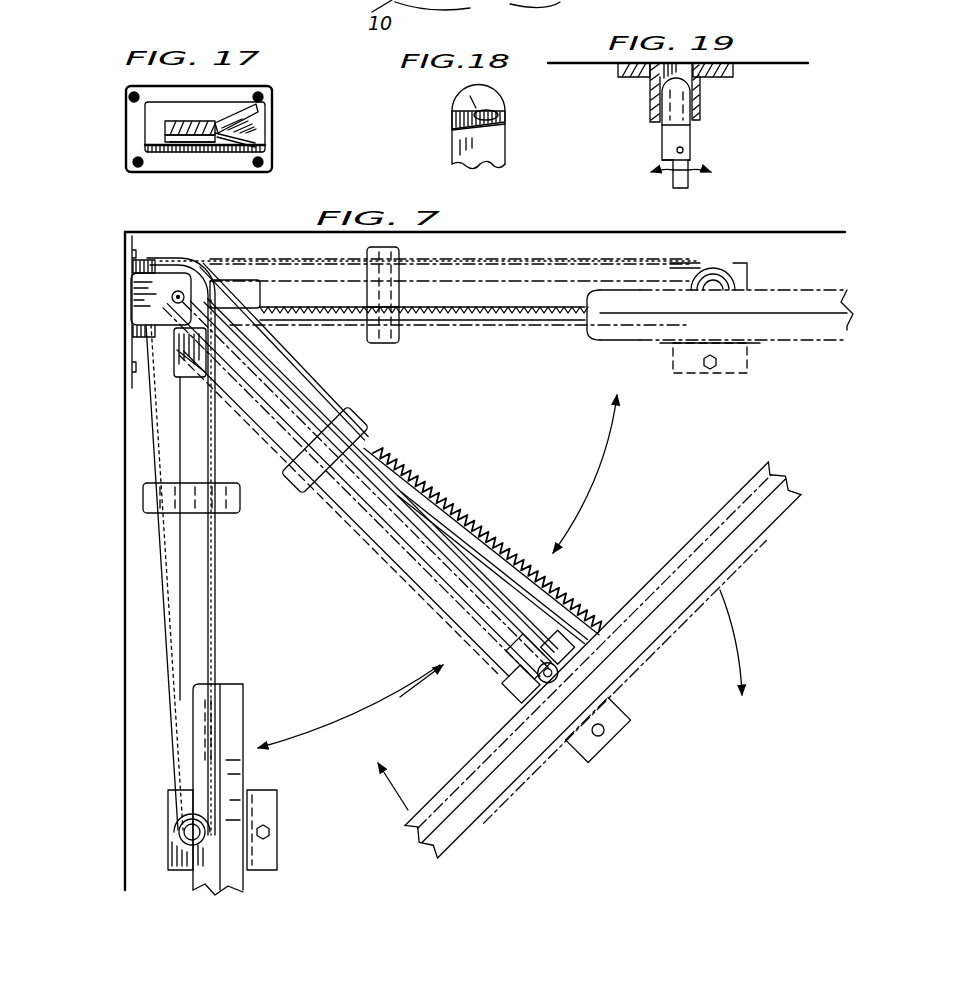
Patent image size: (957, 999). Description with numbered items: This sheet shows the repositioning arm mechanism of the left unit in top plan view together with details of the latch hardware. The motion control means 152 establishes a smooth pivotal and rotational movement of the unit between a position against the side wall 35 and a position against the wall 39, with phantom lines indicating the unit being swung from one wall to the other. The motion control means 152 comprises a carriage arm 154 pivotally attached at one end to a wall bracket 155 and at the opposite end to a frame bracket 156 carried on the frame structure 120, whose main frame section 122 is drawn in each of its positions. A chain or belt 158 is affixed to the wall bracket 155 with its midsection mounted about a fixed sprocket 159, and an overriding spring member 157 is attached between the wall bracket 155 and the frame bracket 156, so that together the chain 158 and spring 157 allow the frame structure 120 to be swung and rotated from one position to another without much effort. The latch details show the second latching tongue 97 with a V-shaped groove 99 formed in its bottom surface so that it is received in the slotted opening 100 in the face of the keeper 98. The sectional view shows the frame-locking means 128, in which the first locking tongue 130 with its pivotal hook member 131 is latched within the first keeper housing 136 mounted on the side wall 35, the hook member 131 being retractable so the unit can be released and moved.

In FIG. 7, the side wall 35 is at (537, 225).
In FIG. 7, the wall 39 is at (123, 722).
In FIG. 17, the second latching tongue 97 is at (222, 138).
In FIG. 18, the second latching tongue 97 is at (497, 146).
In FIG. 17, the keeper 98 is at (253, 127).
In FIG. 17, the V-shaped groove 99 is at (173, 152).
In FIG. 18, the V-shaped groove 99 is at (497, 112).
In FIG. 17, the slotted opening 100 is at (200, 142).
In FIG. 7, the frame structure 120 is at (811, 312).
In FIG. 7, the main frame section 122 is at (647, 340).
In FIG. 19, the frame-locking means 128 is at (635, 119).
In FIG. 19, the first locking tongue 130 is at (661, 136).
In FIG. 19, the pivotal hook member 131 is at (679, 181).
In FIG. 19, the first keeper housing 136 is at (649, 78).
In FIG. 7, the motion control means 152 is at (417, 510).
In FIG. 7, the carriage arm 154 is at (442, 303).
In FIG. 7, the wall bracket 155 is at (135, 298).
In FIG. 7, the frame bracket 156 is at (745, 287).
In FIG. 7, the overriding spring member 157 is at (452, 320).
In FIG. 7, the chain or belt 158 is at (283, 262).
In FIG. 7, the fixed sprocket 159 is at (712, 268).